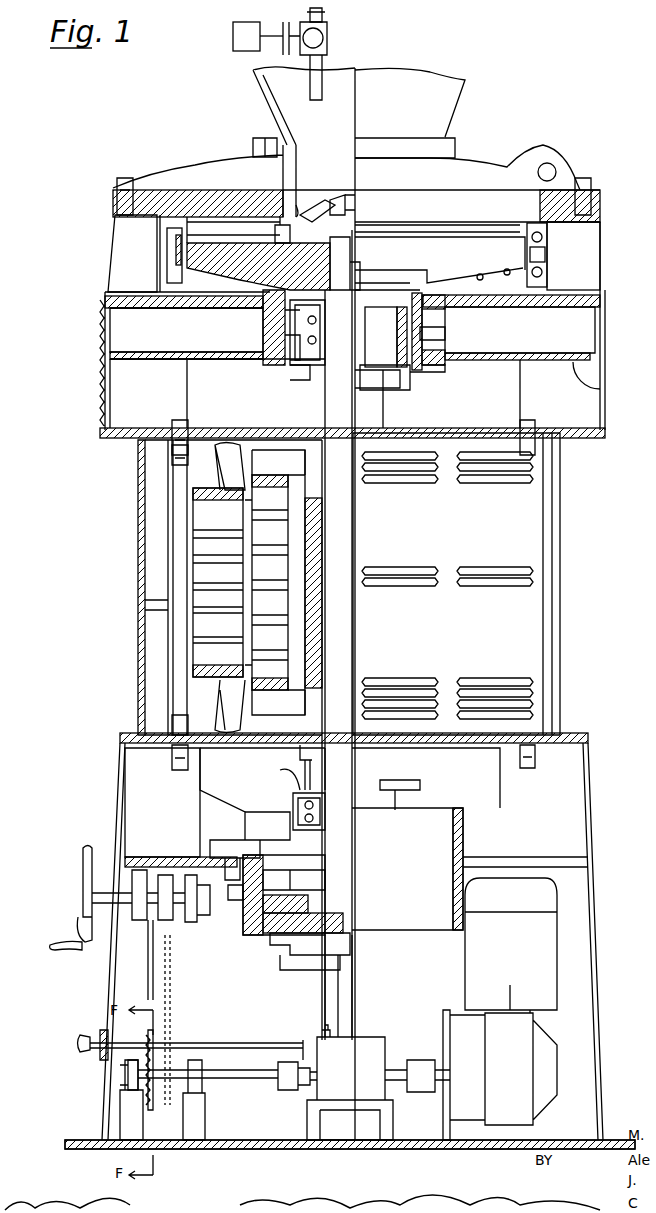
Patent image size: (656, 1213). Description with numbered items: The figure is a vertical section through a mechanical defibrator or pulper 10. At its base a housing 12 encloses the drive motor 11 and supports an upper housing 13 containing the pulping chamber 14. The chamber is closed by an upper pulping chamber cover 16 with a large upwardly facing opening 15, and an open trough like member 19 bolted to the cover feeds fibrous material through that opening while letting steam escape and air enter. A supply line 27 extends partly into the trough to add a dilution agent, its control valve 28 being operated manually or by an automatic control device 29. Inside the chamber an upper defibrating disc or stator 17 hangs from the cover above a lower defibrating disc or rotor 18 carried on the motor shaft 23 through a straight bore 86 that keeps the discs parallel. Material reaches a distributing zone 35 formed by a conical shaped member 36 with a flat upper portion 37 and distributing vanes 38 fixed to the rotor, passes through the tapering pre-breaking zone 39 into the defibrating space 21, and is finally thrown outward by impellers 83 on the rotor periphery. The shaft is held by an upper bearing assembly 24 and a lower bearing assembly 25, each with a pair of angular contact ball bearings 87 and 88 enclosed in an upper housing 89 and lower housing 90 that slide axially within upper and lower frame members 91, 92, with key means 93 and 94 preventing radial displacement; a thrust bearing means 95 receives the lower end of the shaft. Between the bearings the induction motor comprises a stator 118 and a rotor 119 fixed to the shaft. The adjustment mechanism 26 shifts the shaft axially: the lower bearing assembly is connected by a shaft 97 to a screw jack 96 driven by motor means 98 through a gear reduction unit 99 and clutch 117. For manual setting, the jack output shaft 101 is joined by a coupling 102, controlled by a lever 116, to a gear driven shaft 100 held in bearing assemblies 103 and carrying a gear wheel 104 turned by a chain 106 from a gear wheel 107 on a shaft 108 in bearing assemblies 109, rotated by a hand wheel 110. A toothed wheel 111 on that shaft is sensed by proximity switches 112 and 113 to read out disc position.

The mechanical defibrator or pulper 10 is at (114, 496).
The drive motor 11 is at (240, 545).
The housing 12 is at (200, 620).
The upper housing 13 is at (110, 300).
The pulping chamber 14 is at (180, 288).
The upwardly facing opening 15 is at (300, 140).
The upper pulping chamber cover 16 is at (195, 165).
The upper defibrating disc or stator 17 is at (130, 223).
The lower defibrating disc or rotor 18 is at (180, 258).
The trough like member 19 is at (445, 100).
The defibrating space 21 is at (172, 243).
The shaft 23 is at (330, 400).
The upper bearing assembly 24 is at (410, 375).
The lower bearing assembly 25 is at (443, 830).
The adjustment mechanism 26 is at (565, 1113).
The supply line 27 is at (322, 10).
The control valve 28 is at (322, 36).
The automatic control device 29 is at (233, 36).
The distributing zone 35 is at (343, 195).
The conical shaped member 36 is at (355, 208).
The flat upper portion 37 is at (352, 195).
The distributing vanes 38 is at (305, 213).
The pre-breaking zone 39 is at (294, 205).
The impellers 83 is at (547, 252).
The straight bore 86 is at (350, 260).
The angular contact ball bearings 87 is at (295, 365).
The angular contact ball bearings 88 is at (290, 790).
The upper housing 89 is at (280, 318).
The lower housing 90 is at (240, 830).
The upper frame member 91 is at (445, 358).
The lower frame member 92 is at (275, 905).
The key means 93 is at (445, 334).
The key means 94 is at (238, 900).
The thrust bearing means 95 is at (290, 935).
The screw jack 96 is at (370, 1037).
The shaft 97 is at (360, 1000).
The motor means 98 is at (520, 942).
The gear reduction unit 99 is at (510, 1050).
The gear driven shaft 100 is at (250, 1080).
The output shaft 101 is at (310, 1080).
The coupling 102 is at (255, 1085).
The bearing assemblies 103 is at (133, 1130).
The gear wheel 104 is at (175, 1060).
The chain 106 is at (165, 972).
The gear wheel 107 is at (140, 920).
The shaft 108 is at (92, 885).
The bearing assemblies 109 is at (100, 930).
The hand wheel 110 is at (85, 848).
The toothed wheel 111 is at (150, 1105).
The proximity switch 112 is at (128, 1085).
The proximity switch 113 is at (71, 1066).
The manually operated lever 116 is at (215, 1043).
The clutch 117 is at (422, 1060).
The stator 118 is at (205, 517).
The rotor 119 is at (265, 567).